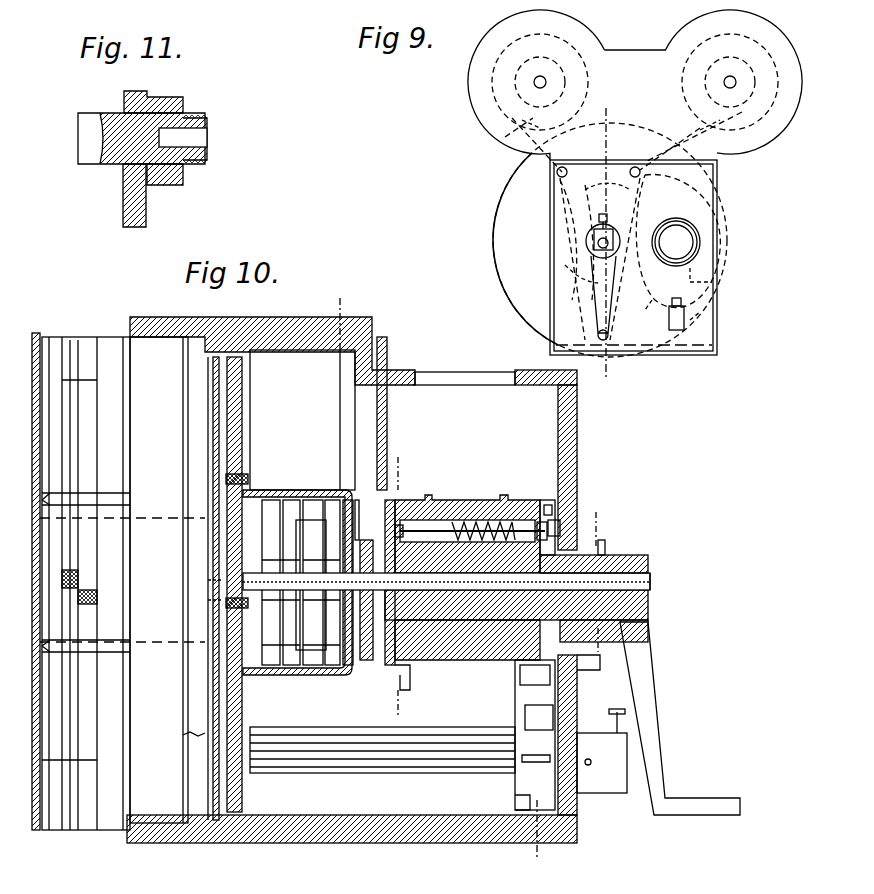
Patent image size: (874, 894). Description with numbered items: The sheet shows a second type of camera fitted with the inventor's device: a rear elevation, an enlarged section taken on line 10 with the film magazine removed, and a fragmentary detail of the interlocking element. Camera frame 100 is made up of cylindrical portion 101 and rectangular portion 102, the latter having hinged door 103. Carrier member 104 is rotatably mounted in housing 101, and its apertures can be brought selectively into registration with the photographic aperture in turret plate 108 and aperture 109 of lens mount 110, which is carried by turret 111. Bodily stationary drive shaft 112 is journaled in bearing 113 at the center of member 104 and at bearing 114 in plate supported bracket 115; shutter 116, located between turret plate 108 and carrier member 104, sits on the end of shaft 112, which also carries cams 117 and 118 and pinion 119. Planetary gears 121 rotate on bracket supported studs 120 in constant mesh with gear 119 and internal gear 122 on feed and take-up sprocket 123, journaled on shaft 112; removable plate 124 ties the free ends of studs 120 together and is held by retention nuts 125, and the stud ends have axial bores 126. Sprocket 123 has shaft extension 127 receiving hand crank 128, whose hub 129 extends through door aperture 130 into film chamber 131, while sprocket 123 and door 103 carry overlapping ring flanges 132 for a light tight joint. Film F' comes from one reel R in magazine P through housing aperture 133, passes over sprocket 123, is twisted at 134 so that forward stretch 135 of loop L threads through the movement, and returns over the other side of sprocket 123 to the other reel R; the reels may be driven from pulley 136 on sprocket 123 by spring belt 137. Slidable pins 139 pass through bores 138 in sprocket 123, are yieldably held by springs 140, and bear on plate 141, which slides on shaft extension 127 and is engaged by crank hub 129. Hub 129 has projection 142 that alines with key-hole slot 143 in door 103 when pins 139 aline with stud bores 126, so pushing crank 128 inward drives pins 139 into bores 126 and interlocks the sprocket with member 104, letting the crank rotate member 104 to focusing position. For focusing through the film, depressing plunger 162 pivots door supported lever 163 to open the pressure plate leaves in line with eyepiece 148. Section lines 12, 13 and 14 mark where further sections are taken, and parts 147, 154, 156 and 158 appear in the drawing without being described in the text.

In FIG. 9, the section line 10 is at (611, 381).
In FIG. 10, the section line 12- 12 is at (388, 457).
In FIG. 10, the section line 13- 13 is at (584, 512).
In FIG. 10, the section line 14- 14 is at (330, 300).
In FIG. 9, the camera frame 100 is at (498, 229).
In FIG. 10, the camera frame 100 is at (399, 850).
In FIG. 9, the cylindrical portion 101 is at (496, 258).
In FIG. 10, the cylindrical portion 101 is at (373, 322).
In FIG. 9, the rectangular portion 102 is at (720, 193).
In FIG. 10, the rectangular portion 102 is at (414, 372).
In FIG. 9, the hinged door 103 is at (700, 323).
In FIG. 10, the hinged door 103 is at (578, 405).
In FIG. 10, the carrier member 104 is at (252, 386).
In FIG. 10, the turret plate 108 is at (188, 735).
In FIG. 10, the aperture 109 is at (140, 640).
In FIG. 10, the lens mount 110 is at (81, 581).
In FIG. 10, the turret 111 is at (140, 348).
In FIG. 9, the drive shaft 112 is at (594, 246).
In FIG. 10, the drive shaft 112 is at (650, 582).
In FIG. 10, the bearing 113 is at (212, 600).
In FIG. 10, the bearing 114 is at (345, 580).
In FIG. 10, the bracket 115 is at (305, 676).
In FIG. 10, the shutter 116 is at (214, 430).
In FIG. 10, the cam 117 is at (282, 498).
In FIG. 10, the cam 118 is at (318, 498).
In FIG. 10, the pinion 119 is at (446, 581).
In FIG. 11, the studs 120 is at (96, 120).
In FIG. 10, the studs 120 is at (364, 540).
In FIG. 10, the planetary gears 121 is at (390, 668).
In FIG. 10, the internal gear 122 is at (365, 500).
In FIG. 9, the feed and take-up sprocket 123 is at (669, 300).
In FIG. 10, the feed and take-up sprocket 123 is at (455, 500).
In FIG. 11, the removable plate 124 is at (146, 206).
In FIG. 10, the removable plate 124 is at (373, 582).
In FIG. 11, the retention nuts 125 is at (170, 98).
In FIG. 10, the retention nuts 125 is at (408, 520).
In FIG. 11, the axial bores 126 is at (200, 137).
In FIG. 9, the shaft extension 127 is at (588, 238).
In FIG. 10, the shaft extension 127 is at (650, 575).
In FIG. 9, the hand crank 128 is at (600, 312).
In FIG. 10, the hand crank 128 is at (660, 722).
In FIG. 10, the hub 129 is at (612, 556).
In FIG. 10, the door aperture 130 is at (580, 655).
In FIG. 10, the film chamber 131 is at (572, 494).
In FIG. 10, the ring flanges 132 is at (560, 505).
In FIG. 10, the housing aperture 133 is at (480, 378).
In FIG. 9, the twist 134 is at (722, 215).
In FIG. 9, the forward stretch 135 is at (700, 232).
In FIG. 9, the pulley 136 is at (566, 283).
In FIG. 10, the pulley 136 is at (410, 688).
In FIG. 9, the spring belt 137 is at (530, 120).
In FIG. 10, the spring belt 137 is at (388, 406).
In FIG. 10, the bores 138 is at (470, 500).
In FIG. 10, the pins 139 is at (430, 498).
In FIG. 10, the springs 140 is at (470, 488).
In FIG. 10, the plate 141 is at (535, 735).
In FIG. 9, the projection 142 is at (599, 217).
In FIG. 10, the projection 142 is at (605, 545).
In FIG. 10, the key-hole slot 143 is at (560, 529).
In FIG. 10, the roller 147 is at (455, 766).
In FIG. 9, the eyepiece 148 is at (700, 252).
In FIG. 10, the plate 154 is at (555, 681).
In FIG. 10, the bar 156 is at (536, 762).
In FIG. 10, the stop 158 is at (518, 800).
In FIG. 9, the plunger 162 is at (690, 305).
In FIG. 10, the plunger 162 is at (616, 709).
In FIG. 10, the lever 163 is at (582, 762).
In FIG. 9, the reel R is at (560, 40).
In FIG. 9, the magazine P is at (800, 62).
In FIG. 9, the loop L is at (712, 277).
In FIG. 9, the film F' is at (607, 179).